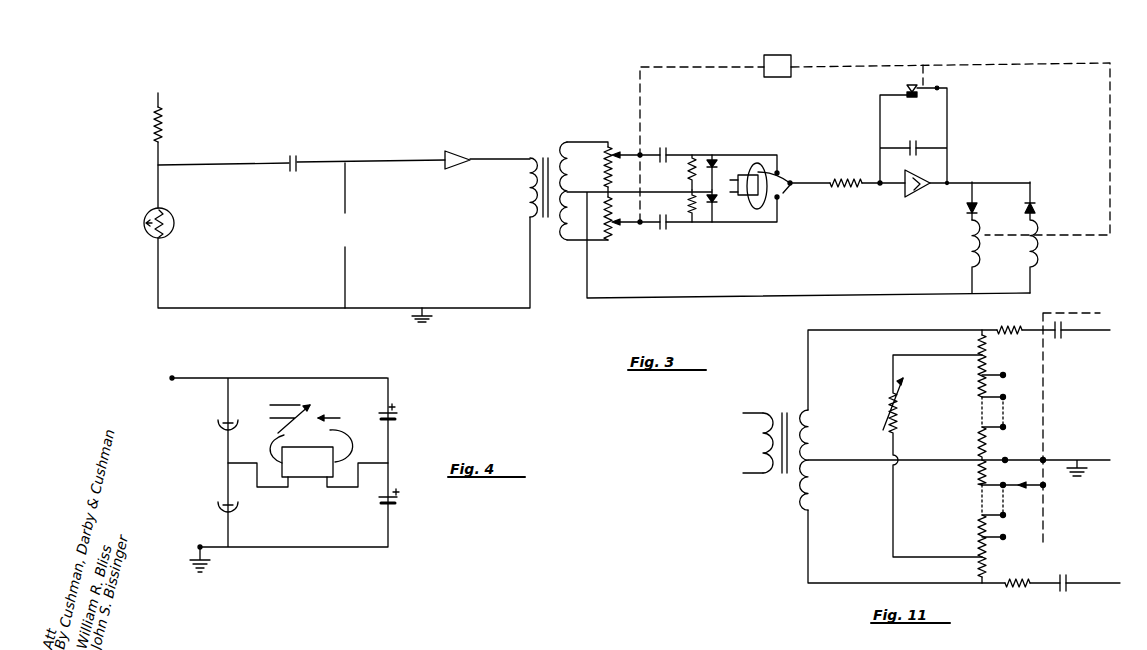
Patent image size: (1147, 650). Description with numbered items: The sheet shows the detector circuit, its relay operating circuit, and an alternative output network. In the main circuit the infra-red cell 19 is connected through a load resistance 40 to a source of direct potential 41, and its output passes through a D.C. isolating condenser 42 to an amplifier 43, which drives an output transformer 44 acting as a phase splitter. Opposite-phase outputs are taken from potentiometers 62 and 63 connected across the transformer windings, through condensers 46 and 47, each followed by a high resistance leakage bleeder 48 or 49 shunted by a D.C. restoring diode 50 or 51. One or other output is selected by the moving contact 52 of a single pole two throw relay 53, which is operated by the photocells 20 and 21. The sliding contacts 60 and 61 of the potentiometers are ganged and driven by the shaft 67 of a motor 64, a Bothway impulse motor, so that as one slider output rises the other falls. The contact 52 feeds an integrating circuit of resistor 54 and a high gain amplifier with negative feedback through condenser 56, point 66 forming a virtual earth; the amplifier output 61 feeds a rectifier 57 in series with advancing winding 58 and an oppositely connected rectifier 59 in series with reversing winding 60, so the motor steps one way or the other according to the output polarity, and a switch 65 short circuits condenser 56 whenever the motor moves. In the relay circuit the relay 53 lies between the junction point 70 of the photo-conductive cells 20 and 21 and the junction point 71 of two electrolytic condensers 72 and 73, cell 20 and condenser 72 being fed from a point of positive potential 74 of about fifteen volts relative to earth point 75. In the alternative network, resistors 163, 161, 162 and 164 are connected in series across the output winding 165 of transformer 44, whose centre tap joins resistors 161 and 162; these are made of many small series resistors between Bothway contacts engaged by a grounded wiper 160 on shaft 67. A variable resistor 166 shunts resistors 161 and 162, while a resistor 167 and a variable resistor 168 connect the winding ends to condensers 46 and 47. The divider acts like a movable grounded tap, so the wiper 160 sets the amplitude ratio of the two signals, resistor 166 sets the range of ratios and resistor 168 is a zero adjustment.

In FIG. 3, the infra-red cell 19 is at (174, 223).
In FIG. 3, the load resistance 40 is at (162, 127).
In FIG. 3, the source of direct potential 41 is at (158, 93).
In FIG. 3, the D.C. isolating condenser 42 is at (298, 158).
In FIG. 3, the amplifier 43 is at (465, 154).
In FIG. 3, the output transformer 44 is at (546, 146).
In FIG. 11, the output transformer 44 is at (787, 397).
In FIG. 3, the condenser 46 is at (668, 150).
In FIG. 11, the condenser 46 is at (1062, 334).
In FIG. 3, the condenser 47 is at (668, 229).
In FIG. 11, the condenser 47 is at (1067, 585).
In FIG. 3, the high resistance leakage bleeder 48 is at (687, 171).
In FIG. 3, the high resistance leakage bleeder 49 is at (687, 204).
In FIG. 3, the D.C. restoring diode 50 is at (712, 158).
In FIG. 3, the D.C. restoring diode 51 is at (714, 202).
In FIG. 3, the moving contact 52 is at (784, 168).
In FIG. 4, the moving contact 52 is at (315, 399).
In FIG. 3, the single pole two throw relay 53 is at (781, 198).
In FIG. 4, the single pole two throw relay 53 is at (294, 440).
In FIG. 3, the resistor 54 is at (859, 175).
In FIG. 3, the condenser 56 is at (921, 138).
In FIG. 3, the rectifier 57 is at (978, 209).
In FIG. 3, the advancing winding 58 is at (981, 248).
In FIG. 3, the rectifier 59 is at (1036, 208).
In FIG. 3, the sliding contact / reversing winding 60 is at (645, 155).
In FIG. 3, the sliding contact / amplifier output 61 is at (640, 228).
In FIG. 3, the potentiometer 62 is at (606, 145).
In FIG. 3, the potentiometer 63 is at (608, 242).
In FIG. 3, the motor 64 is at (791, 56).
In FIG. 3, the switch 65 is at (906, 90).
In FIG. 3, the virtual earth point 66 is at (882, 186).
In FIG. 3, the shaft 67 is at (700, 66).
In FIG. 11, the shaft 67 is at (1045, 405).
In FIG. 4, the photo-conductive cell 20 is at (217, 427).
In FIG. 4, the photo-conductive cell 21 is at (217, 511).
In FIG. 4, the junction point 70 is at (223, 463).
In FIG. 4, the junction point 71 is at (390, 461).
In FIG. 4, the electrolytic condenser 72 is at (399, 416).
In FIG. 4, the electrolytic condenser 73 is at (399, 501).
In FIG. 4, the point of positive potential 74 is at (172, 376).
In FIG. 4, the earth point 75 is at (206, 539).
In FIG. 11, the wiper 160 is at (1032, 490).
In FIG. 11, the resistor 161 is at (967, 407).
In FIG. 11, the resistor 162 is at (968, 521).
In FIG. 11, the resistor 163 is at (976, 344).
In FIG. 11, the resistor 164 is at (975, 567).
In FIG. 11, the output winding 165 is at (810, 445).
In FIG. 11, the variable resistor 166 is at (886, 410).
In FIG. 11, the resistor 167 is at (1012, 321).
In FIG. 11, the variable resistor 168 is at (1025, 587).